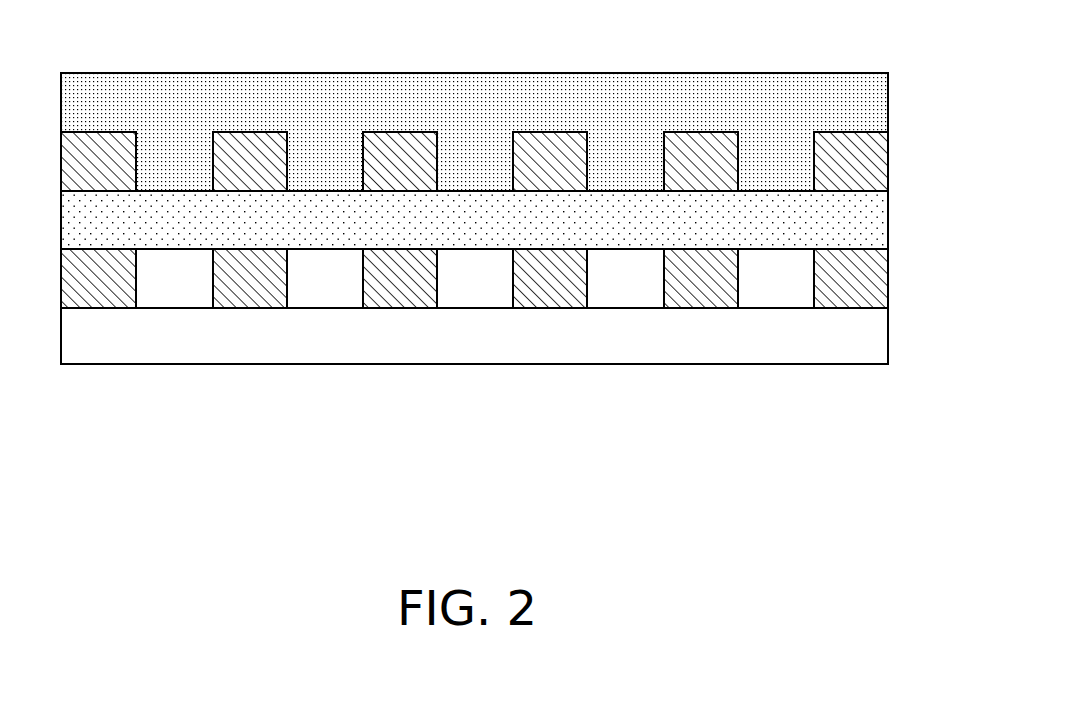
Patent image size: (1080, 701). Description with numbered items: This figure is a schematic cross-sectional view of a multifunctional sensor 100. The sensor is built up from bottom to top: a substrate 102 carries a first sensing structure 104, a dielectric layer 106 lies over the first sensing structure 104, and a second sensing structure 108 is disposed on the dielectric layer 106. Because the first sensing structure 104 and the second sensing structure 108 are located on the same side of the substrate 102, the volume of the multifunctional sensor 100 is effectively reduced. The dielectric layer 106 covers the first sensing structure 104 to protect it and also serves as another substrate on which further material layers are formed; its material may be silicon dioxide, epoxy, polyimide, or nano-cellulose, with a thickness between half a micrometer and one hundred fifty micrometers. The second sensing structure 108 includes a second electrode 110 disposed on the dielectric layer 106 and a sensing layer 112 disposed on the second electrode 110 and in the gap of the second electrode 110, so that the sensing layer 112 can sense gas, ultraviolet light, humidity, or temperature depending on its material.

The multifunctional sensor 100 is at (1071, 450).
The substrate 102 is at (878, 342).
The first sensing structure 104 is at (878, 280).
The dielectric layer 106 is at (878, 216).
The second sensing structure 108 is at (552, 130).
The second electrode 110 is at (878, 165).
The sensing layer 112 is at (878, 104).